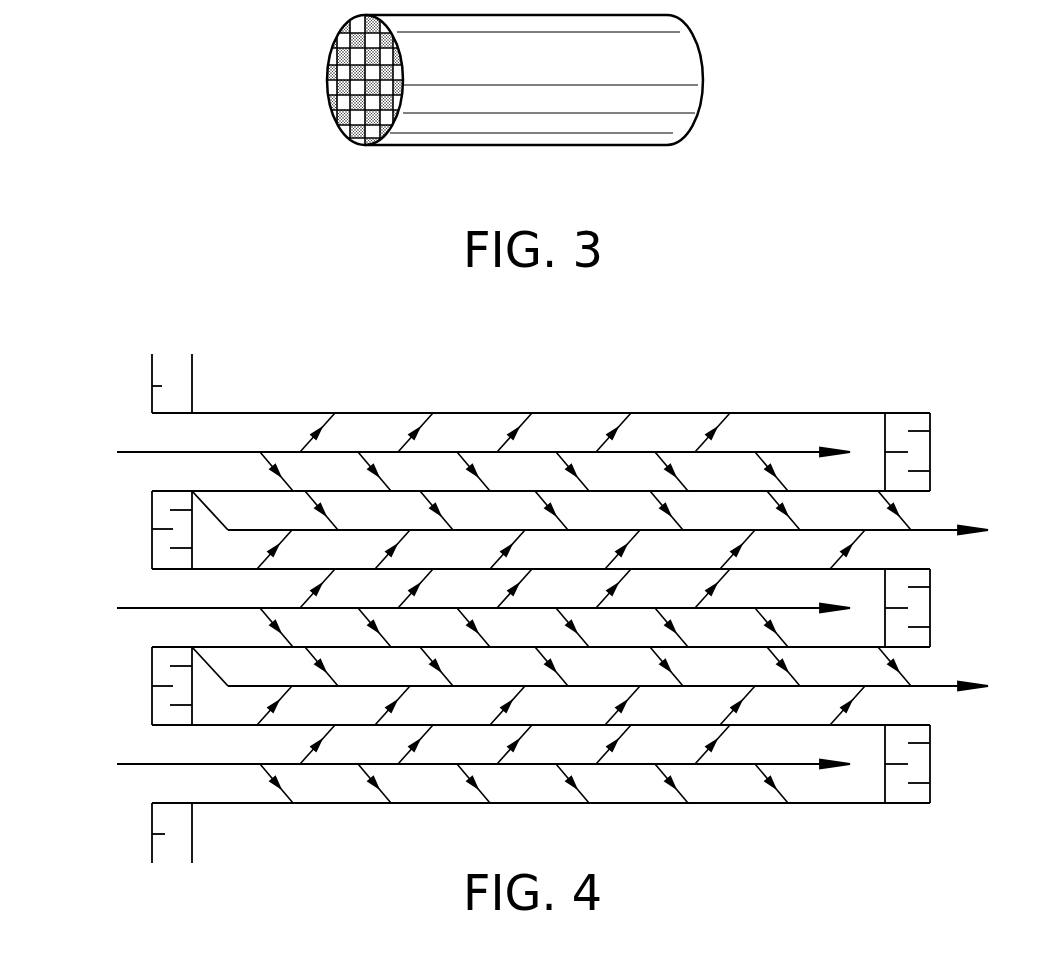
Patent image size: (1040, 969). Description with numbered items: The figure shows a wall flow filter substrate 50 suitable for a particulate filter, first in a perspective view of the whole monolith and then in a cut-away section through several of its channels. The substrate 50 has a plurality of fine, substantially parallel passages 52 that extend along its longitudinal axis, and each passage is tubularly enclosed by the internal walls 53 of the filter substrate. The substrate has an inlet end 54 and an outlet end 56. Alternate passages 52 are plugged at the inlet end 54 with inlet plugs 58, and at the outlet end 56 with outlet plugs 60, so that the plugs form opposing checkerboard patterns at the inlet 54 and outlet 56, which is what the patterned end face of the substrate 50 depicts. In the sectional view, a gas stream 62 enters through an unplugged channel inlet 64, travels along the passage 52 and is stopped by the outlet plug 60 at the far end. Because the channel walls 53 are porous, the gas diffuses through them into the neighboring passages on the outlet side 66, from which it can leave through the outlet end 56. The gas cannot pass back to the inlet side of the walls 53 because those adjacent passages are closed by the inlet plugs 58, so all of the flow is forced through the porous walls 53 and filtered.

In FIG. 3, the wall flow filter substrate 50 is at (445, 169).
In FIG. 4, the passages 52 is at (215, 496).
In FIG. 4, the internal walls 53 is at (507, 491).
In FIG. 4, the inlet end 54 is at (121, 348).
In FIG. 4, the outlet end 56 is at (957, 411).
In FIG. 4, the inlet plugs 58 is at (160, 385).
In FIG. 4, the outlet plugs 60 is at (920, 452).
In FIG. 4, the gas stream 62 is at (243, 453).
In FIG. 4, the channel inlet 64 is at (186, 443).
In FIG. 4, the outlet side 66 is at (923, 560).